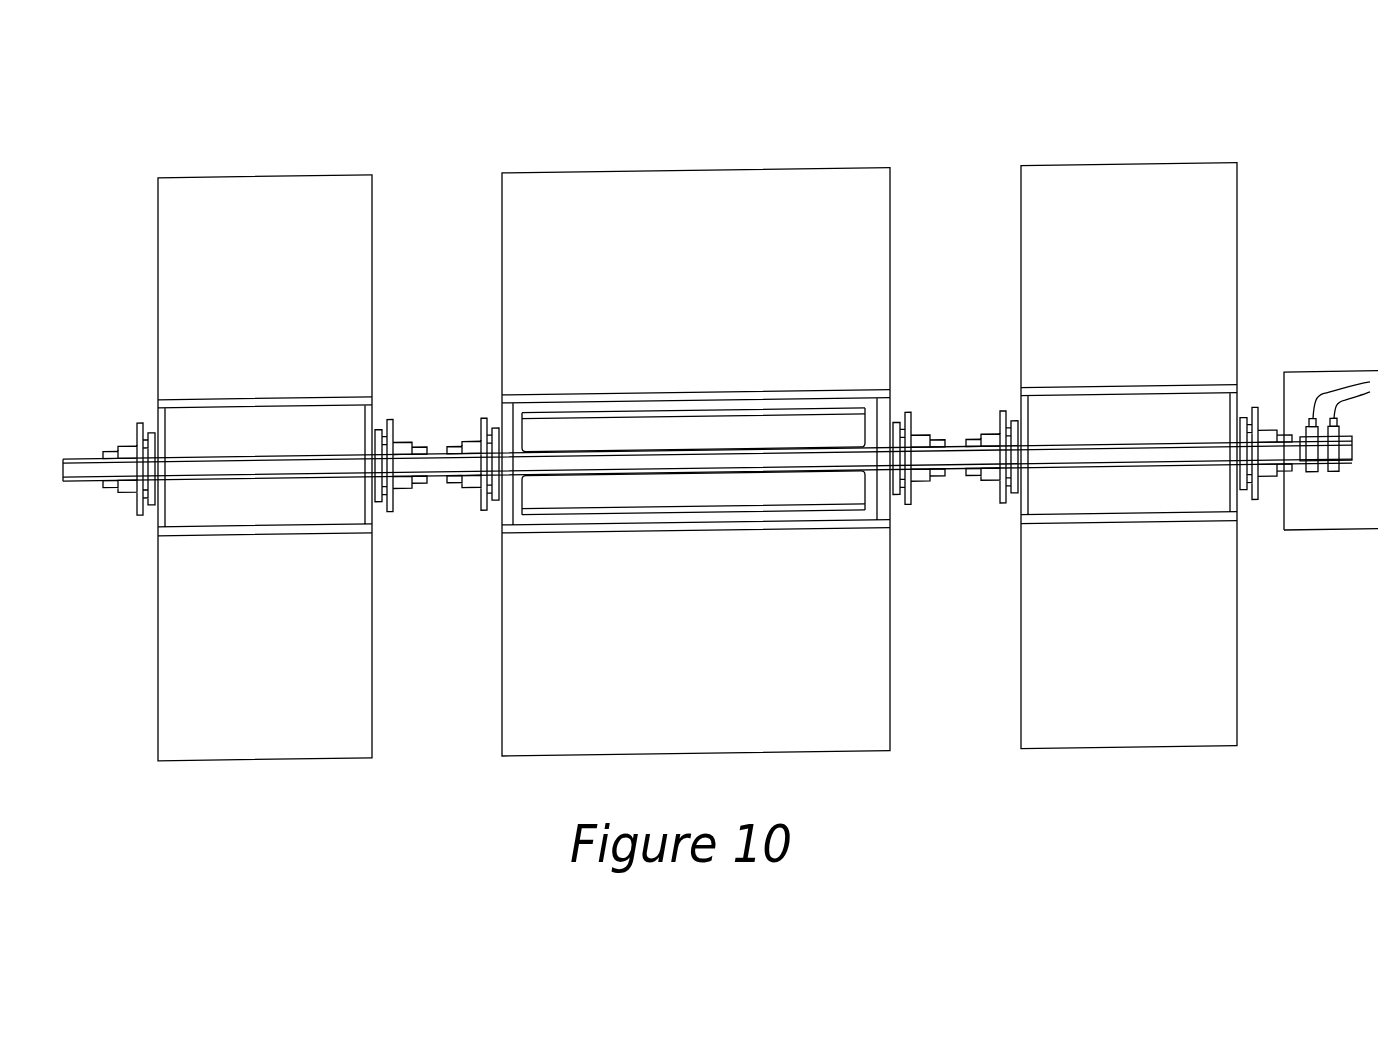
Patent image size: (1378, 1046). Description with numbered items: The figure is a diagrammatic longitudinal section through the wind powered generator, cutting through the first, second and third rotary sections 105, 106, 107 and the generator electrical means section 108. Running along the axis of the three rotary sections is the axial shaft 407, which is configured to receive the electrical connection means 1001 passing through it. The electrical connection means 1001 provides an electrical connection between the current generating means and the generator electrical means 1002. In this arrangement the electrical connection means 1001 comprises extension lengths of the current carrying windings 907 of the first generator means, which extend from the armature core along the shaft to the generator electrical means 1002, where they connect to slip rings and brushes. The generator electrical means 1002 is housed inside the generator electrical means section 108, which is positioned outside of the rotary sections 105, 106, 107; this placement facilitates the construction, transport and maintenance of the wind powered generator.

The first rotary section 105 is at (165, 165).
The second rotary section 106 is at (660, 155).
The third rotary section 107 is at (1088, 150).
The generator electrical means section 108 is at (1327, 355).
The axial shaft 407 is at (87, 472).
The current carrying windings 907 is at (565, 424).
The electrical connection means 1001 is at (923, 463).
The generator electrical means 1002 is at (1333, 474).